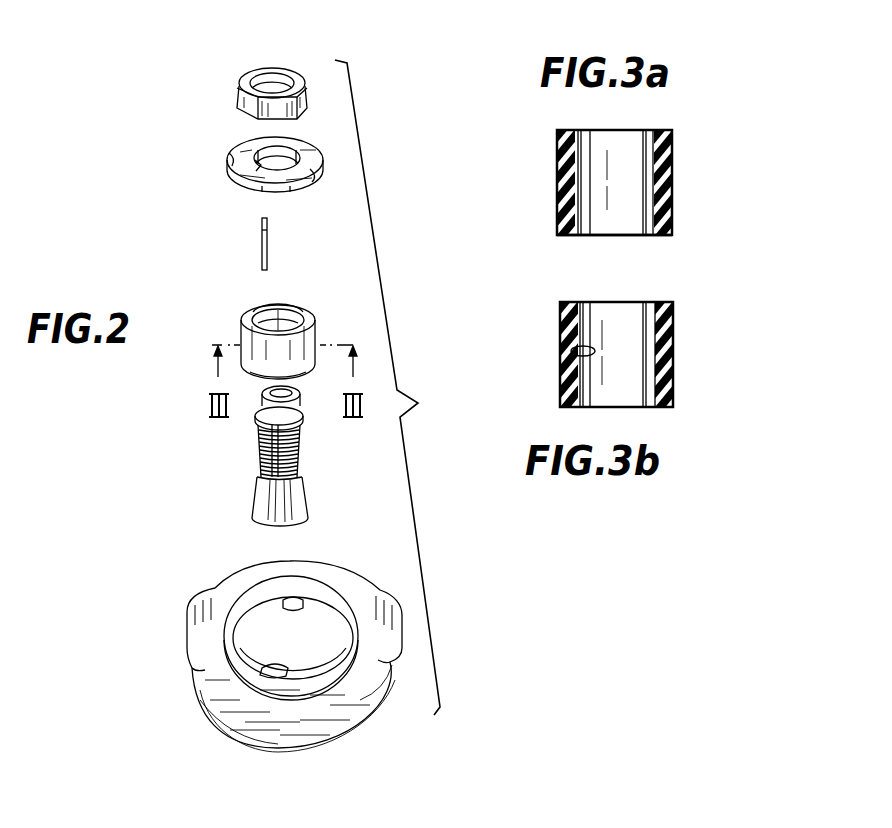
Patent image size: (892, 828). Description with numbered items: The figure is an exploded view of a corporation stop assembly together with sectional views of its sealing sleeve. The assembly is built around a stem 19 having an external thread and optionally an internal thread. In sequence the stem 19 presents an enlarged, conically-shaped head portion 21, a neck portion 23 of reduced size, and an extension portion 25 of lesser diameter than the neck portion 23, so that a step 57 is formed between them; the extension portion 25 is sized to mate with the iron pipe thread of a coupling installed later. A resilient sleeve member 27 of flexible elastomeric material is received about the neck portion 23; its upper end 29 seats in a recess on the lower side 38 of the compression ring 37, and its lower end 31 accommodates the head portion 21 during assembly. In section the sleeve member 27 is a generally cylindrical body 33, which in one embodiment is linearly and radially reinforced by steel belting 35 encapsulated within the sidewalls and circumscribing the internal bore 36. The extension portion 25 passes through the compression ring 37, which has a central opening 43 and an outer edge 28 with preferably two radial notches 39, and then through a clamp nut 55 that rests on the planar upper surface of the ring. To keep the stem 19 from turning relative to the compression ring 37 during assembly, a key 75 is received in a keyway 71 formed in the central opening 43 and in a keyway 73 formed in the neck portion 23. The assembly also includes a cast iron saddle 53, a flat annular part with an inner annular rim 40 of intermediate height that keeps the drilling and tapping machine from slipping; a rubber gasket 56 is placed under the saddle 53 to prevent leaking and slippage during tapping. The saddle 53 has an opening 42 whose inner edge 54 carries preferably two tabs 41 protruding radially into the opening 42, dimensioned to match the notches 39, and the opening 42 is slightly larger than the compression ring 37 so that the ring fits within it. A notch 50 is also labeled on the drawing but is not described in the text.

In FIG. 2, the stem 19 is at (308, 472).
In FIG. 2, the head portion 21 is at (297, 500).
In FIG. 2, the neck portion 23 is at (300, 425).
In FIG. 2, the extension portion 25 is at (262, 413).
In FIG. 2, the resilient sleeve member 27 is at (315, 322).
In FIG. 3a, the resilient sleeve member 27 is at (677, 196).
In FIG. 2, the outer edge 28 is at (287, 192).
In FIG. 2, the upper end 29 is at (247, 318).
In FIG. 3a, the upper end 29 is at (560, 130).
In FIG. 2, the lower end 31 is at (310, 378).
In FIG. 3a, the lower end 31 is at (562, 236).
In FIG. 3a, the cylindrical body 33 is at (672, 140).
In FIG. 3b, the steel belting 35 is at (673, 335).
In FIG. 3b, the internal bore 36 is at (573, 352).
In FIG. 2, the compression ring 37 is at (318, 165).
In FIG. 2, the lower side 38 is at (262, 192).
In FIG. 2, the radial notches 39 is at (245, 147).
In FIG. 2, the inner annular rim 40 is at (357, 645).
In FIG. 2, the tabs 41 is at (232, 637).
In FIG. 2, the opening 42 is at (298, 623).
In FIG. 2, the central opening 43 is at (283, 150).
In FIG. 2, the washer notch 50 is at (232, 160).
In FIG. 2, the saddle 53 is at (377, 670).
In FIG. 2, the inner edge 54 is at (237, 630).
In FIG. 2, the clamp nut 55 is at (305, 45).
In FIG. 2, the rubber gasket 56 is at (223, 730).
In FIG. 2, the step 57 is at (262, 432).
In FIG. 2, the keyway 71 is at (258, 168).
In FIG. 2, the keyway 73 is at (262, 480).
In FIG. 2, the key 75 is at (268, 240).